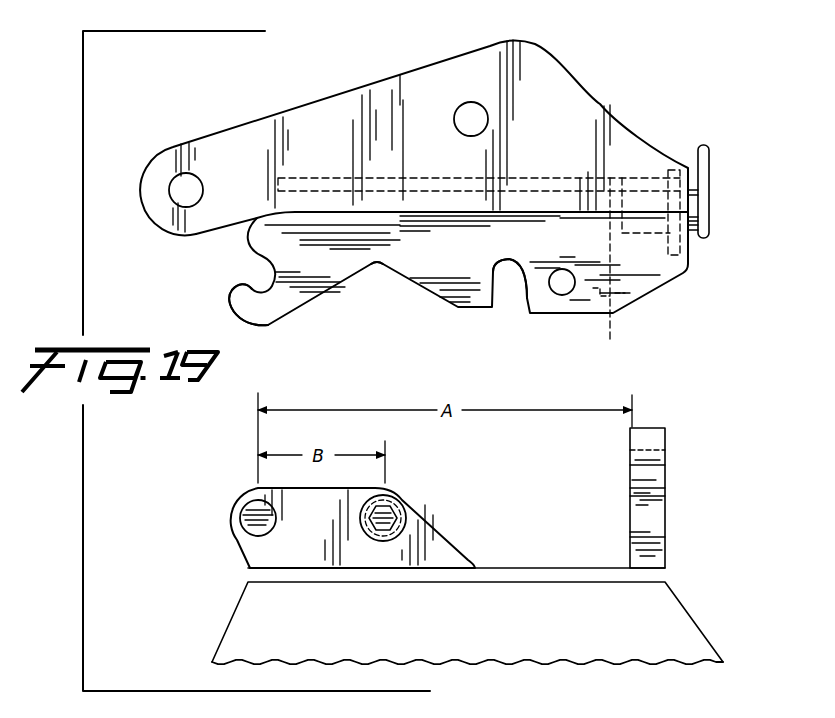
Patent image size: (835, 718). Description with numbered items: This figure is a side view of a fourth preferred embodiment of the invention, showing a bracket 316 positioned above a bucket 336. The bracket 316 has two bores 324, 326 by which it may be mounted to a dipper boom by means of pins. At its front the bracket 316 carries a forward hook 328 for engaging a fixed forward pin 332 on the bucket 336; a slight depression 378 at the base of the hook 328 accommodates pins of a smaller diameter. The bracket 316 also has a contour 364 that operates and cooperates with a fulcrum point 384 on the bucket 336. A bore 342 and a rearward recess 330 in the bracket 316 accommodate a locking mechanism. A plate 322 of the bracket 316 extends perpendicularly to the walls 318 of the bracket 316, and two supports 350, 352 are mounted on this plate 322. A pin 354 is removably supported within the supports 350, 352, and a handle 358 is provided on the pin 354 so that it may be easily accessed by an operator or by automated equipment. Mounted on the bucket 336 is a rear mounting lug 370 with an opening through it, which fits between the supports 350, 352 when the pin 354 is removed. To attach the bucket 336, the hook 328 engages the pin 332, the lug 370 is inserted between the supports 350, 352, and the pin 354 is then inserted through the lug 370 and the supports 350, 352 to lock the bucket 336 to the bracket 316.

The bracket 316 is at (460, 195).
The walls 318 is at (563, 63).
The plate 322 is at (340, 176).
The bore 324 is at (182, 176).
The bore 326 is at (470, 103).
The forward hook 328 is at (253, 317).
The rearward recess 330 is at (523, 288).
The pin 332 is at (248, 528).
The bucket 336 is at (688, 615).
The bore 342 is at (562, 286).
The support 350 is at (629, 273).
The support 352 is at (690, 272).
The pin 354 is at (650, 238).
The handle 358 is at (710, 163).
The contour 364 is at (383, 270).
The rear mounting lug 370 is at (663, 505).
The depression 378 is at (240, 277).
The fulcrum point 384 is at (415, 503).